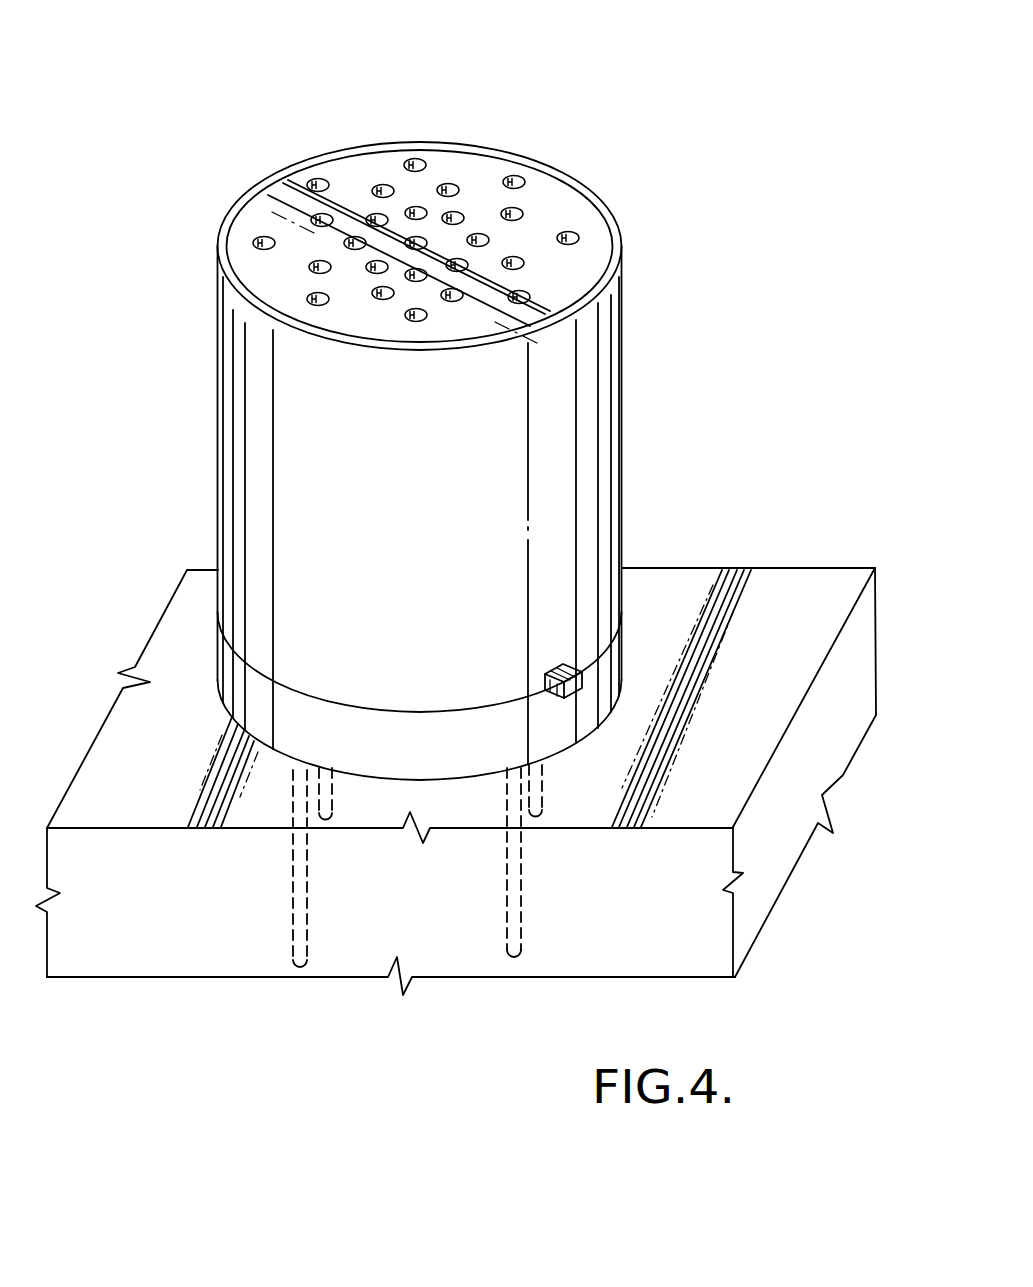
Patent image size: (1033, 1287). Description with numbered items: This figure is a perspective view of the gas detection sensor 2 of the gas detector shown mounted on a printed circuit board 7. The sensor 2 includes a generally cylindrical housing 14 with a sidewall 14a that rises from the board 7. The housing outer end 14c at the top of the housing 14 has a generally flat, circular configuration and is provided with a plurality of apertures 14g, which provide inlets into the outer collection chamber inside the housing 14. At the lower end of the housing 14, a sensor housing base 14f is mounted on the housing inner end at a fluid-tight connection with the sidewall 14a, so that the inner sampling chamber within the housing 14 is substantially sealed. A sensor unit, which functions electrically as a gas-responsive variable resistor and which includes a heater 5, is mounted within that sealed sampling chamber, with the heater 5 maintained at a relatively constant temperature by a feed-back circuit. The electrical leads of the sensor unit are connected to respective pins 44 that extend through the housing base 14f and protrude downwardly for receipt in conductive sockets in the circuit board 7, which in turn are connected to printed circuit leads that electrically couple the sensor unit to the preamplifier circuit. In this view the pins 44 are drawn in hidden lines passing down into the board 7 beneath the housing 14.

The gas detection sensor 2 is at (623, 132).
The heater 5 is at (371, 566).
The printed circuit board 7 is at (822, 765).
The housing 14 is at (639, 390).
The sidewall 14a is at (260, 378).
The housing outer end 14c is at (475, 170).
The sensor housing base 14f is at (593, 677).
The apertures 14g is at (523, 263).
The pins 44 is at (547, 797).